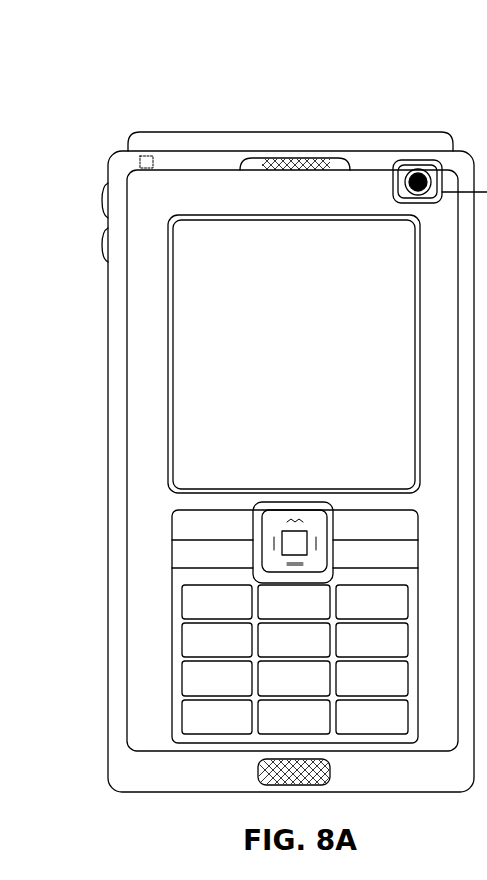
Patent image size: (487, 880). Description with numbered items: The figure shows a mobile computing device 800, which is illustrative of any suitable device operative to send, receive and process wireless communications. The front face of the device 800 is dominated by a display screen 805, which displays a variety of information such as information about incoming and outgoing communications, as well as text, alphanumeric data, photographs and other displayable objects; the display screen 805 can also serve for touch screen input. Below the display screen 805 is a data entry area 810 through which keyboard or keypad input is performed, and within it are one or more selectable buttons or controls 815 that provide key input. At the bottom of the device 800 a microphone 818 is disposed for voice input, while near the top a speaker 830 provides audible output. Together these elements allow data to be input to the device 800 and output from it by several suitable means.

The mobile computing device 800 is at (104, 154).
The display screen 805 is at (200, 340).
The data entry area 810 is at (173, 550).
The selectable buttons or controls 815 is at (193, 640).
The microphone 818 is at (258, 768).
The speaker 830 is at (335, 158).